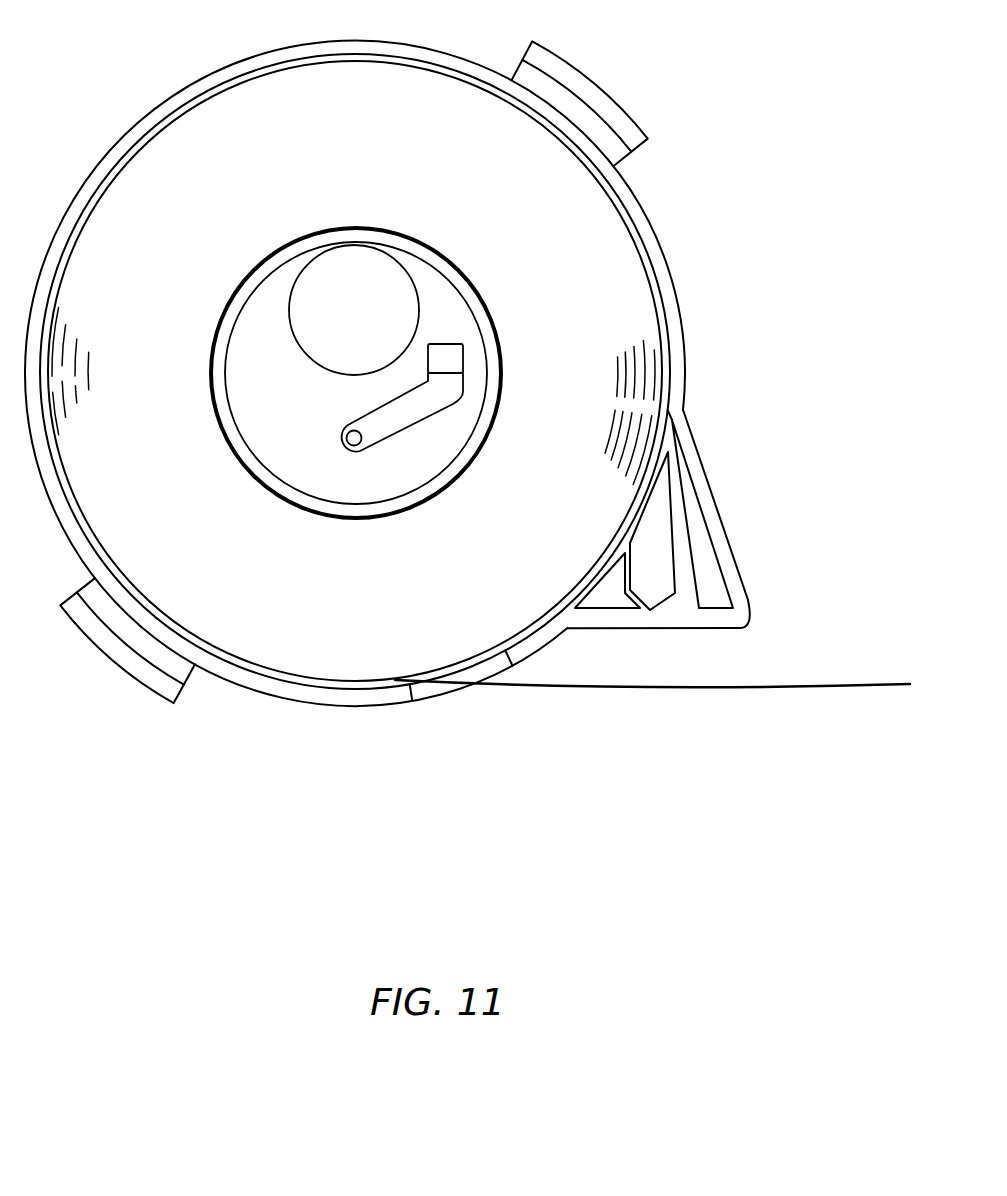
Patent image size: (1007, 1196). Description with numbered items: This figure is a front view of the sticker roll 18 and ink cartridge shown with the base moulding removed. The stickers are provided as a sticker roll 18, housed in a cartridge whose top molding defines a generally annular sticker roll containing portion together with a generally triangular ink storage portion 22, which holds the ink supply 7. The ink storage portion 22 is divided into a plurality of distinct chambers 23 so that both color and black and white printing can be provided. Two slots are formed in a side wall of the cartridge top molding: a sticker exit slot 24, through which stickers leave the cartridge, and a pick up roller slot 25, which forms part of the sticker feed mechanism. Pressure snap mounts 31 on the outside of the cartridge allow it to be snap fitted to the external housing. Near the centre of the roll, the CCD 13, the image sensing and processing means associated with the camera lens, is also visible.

The ink supply 7 is at (708, 588).
The ink storage portion 22 is at (708, 588).
The CCD 13 is at (463, 355).
The sticker roll 18 is at (610, 235).
The chambers 23 is at (710, 577).
The sticker exit slot 24 is at (430, 697).
The pick up roller slot 25 is at (533, 643).
The pressure snap mounts 31 is at (577, 88).